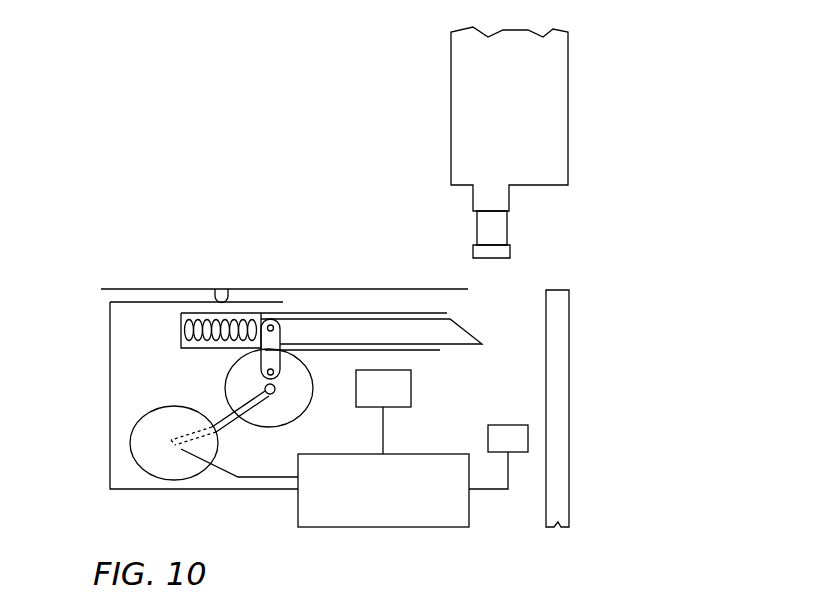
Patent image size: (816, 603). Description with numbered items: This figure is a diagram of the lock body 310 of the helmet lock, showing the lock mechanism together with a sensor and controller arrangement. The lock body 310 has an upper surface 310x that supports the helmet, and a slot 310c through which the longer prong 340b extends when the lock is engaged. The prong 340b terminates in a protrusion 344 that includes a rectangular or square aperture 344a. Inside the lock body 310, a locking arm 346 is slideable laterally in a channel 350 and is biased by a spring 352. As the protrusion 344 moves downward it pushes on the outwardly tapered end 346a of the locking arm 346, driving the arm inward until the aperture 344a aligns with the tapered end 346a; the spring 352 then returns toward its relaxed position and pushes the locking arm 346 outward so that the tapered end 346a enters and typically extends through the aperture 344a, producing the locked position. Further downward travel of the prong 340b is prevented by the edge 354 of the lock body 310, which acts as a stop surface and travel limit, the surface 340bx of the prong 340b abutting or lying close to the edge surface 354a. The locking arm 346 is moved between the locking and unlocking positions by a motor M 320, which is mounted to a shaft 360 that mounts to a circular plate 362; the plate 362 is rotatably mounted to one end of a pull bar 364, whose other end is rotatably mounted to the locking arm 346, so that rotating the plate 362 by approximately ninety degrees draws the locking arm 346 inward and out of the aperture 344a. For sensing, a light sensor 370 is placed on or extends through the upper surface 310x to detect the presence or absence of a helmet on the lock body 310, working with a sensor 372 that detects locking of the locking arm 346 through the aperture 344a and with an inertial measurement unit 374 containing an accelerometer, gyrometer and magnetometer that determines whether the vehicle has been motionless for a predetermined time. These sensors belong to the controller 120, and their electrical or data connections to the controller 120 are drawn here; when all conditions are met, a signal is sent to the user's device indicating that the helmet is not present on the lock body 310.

The lock body 310 is at (600, 348).
The upper surface 310x is at (118, 287).
The slot 310c is at (492, 293).
The prong 340b is at (534, 130).
The surface of the prong 340bx is at (547, 183).
The protrusion 344 is at (460, 196).
The aperture 344a is at (506, 232).
The sensor 370 is at (220, 289).
The channel 350 is at (281, 311).
The spring 352 is at (182, 328).
The locking arm 346 is at (372, 340).
The tapered end 346a is at (455, 323).
The pull bar 364 is at (240, 351).
The plate 362 is at (291, 418).
The shaft 360 is at (214, 410).
The motor 320 is at (192, 474).
The inertial measurement unit 374 is at (410, 380).
The sensor 372 is at (484, 433).
The controller 120 is at (359, 515).
The edge 354 is at (578, 403).
The edge surface 354a is at (555, 287).